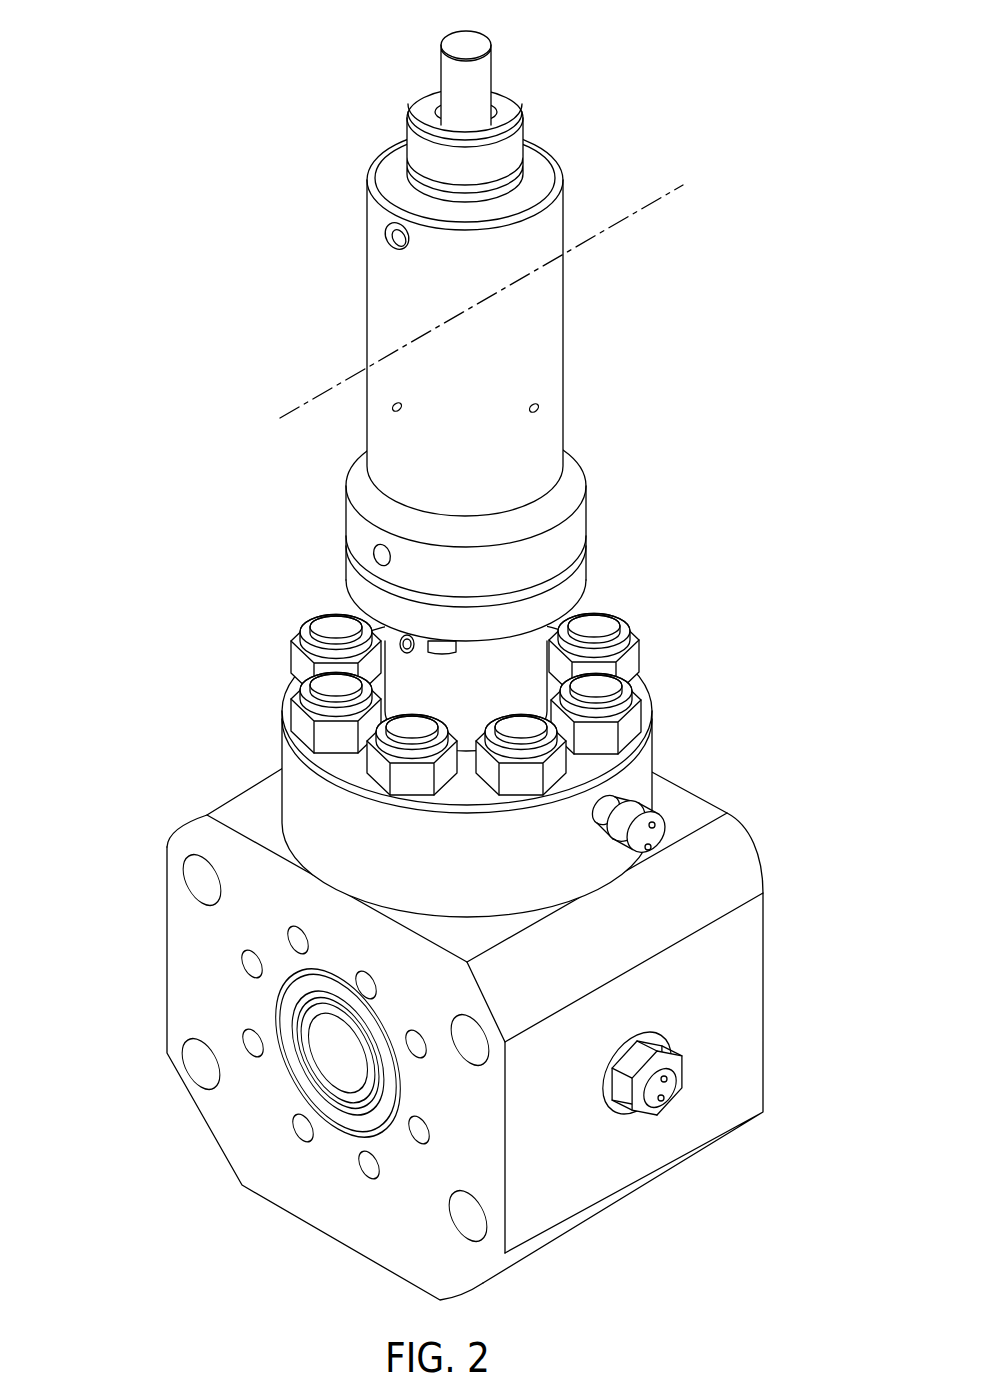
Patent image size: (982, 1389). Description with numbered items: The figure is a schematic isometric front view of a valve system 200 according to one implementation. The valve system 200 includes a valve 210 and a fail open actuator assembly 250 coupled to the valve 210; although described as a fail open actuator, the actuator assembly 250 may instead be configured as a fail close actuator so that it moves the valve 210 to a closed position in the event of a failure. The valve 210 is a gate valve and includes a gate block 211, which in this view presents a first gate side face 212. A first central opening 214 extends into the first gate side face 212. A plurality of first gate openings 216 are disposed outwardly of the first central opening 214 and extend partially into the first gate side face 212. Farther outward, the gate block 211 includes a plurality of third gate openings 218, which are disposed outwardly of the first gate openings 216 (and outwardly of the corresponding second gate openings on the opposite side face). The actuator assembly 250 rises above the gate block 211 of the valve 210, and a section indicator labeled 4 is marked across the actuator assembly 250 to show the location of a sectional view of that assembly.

The valve system 200 is at (437, 654).
The valve 210 is at (400, 1034).
The gate block 211 is at (558, 1190).
The first gate side face 212 is at (307, 1057).
The first central opening 214 is at (332, 1058).
The first gate openings 216 is at (365, 1166).
The third gate openings 218 is at (195, 880).
The fail open actuator assembly 250 is at (589, 293).
The section line 4- 4 is at (214, 380).